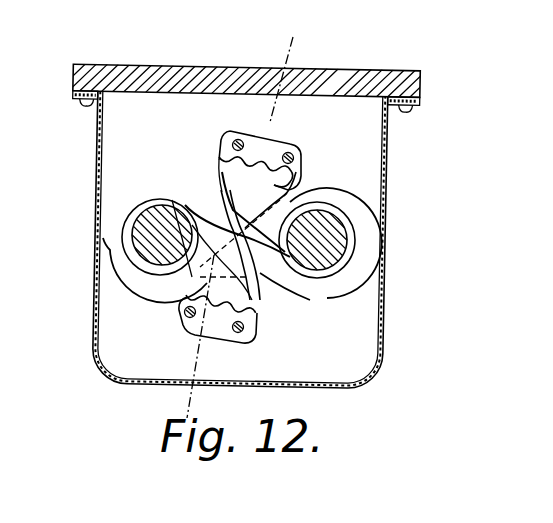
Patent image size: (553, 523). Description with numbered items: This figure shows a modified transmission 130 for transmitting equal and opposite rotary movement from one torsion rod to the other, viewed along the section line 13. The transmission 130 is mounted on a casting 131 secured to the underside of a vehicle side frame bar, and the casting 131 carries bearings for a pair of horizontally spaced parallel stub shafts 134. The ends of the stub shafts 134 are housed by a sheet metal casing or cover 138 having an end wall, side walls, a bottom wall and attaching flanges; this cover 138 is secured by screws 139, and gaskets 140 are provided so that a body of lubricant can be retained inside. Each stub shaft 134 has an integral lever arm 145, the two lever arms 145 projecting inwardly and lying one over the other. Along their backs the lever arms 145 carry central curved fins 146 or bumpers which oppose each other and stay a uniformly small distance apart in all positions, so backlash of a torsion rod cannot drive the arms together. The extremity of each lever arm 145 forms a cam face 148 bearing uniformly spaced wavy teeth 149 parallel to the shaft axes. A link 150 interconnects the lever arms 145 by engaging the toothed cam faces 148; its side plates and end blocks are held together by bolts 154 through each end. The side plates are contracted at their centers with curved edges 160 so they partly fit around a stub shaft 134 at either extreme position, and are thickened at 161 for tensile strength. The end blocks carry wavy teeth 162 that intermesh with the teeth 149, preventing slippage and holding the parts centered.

The section line 13- 13 is at (325, 47).
The transmission 130 is at (396, 158).
The casting 131 is at (186, 66).
The stub shafts 134 is at (177, 205).
The sheet metal casing or cover 138 is at (97, 153).
The screws 139 is at (79, 108).
The gaskets 140 is at (71, 95).
The lever arm 145 is at (305, 208).
The central curved fins 146 is at (221, 213).
The cam face 148 is at (300, 170).
The wavy teeth 149 is at (297, 192).
The link 150 is at (254, 127).
The bolts 154 is at (292, 152).
The curved edges of side plates 160 is at (225, 179).
The thickened centers of side plates 161 is at (255, 325).
The wavy teeth 162 is at (222, 150).